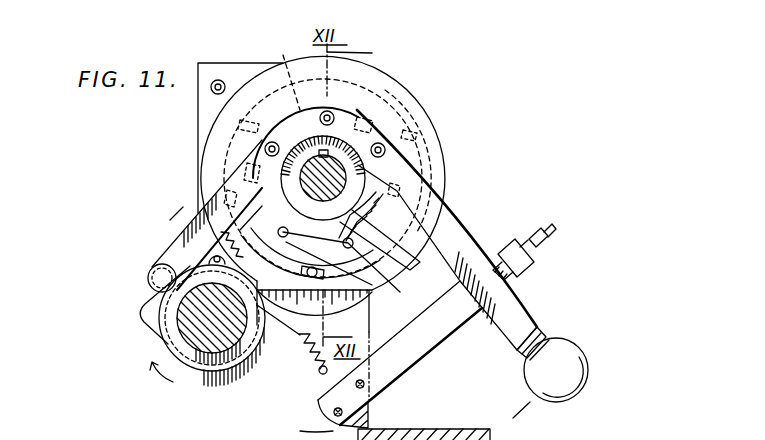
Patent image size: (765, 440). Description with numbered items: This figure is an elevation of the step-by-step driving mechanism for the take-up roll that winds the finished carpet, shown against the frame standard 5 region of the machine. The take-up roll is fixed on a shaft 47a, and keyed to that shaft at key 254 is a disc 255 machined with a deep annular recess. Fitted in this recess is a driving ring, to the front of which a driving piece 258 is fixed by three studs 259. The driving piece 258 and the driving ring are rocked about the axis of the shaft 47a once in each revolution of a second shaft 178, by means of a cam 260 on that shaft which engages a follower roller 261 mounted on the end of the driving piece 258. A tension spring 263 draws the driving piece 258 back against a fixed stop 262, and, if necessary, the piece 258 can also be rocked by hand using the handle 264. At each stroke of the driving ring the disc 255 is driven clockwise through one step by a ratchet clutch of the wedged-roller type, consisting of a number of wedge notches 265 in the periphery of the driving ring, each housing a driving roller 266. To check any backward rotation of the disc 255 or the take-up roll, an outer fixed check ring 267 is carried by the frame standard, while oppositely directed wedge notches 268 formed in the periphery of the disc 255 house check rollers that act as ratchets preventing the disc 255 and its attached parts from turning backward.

The dial plate 5 is at (372, 53).
The shaft 47a is at (330, 180).
The shaft 178 is at (190, 336).
The key 254 is at (327, 153).
The disc 255 is at (400, 268).
The driving piece 258 is at (195, 210).
The studs 259 is at (265, 148).
The cam 260 is at (153, 336).
The follower roller 261 is at (148, 274).
The fixed stop 262 is at (515, 276).
The tension spring 263 is at (302, 353).
The handle 264 is at (566, 389).
The wedge notches 265 is at (378, 287).
The driving roller 266 is at (288, 234).
The outer fixed check ring 267 is at (428, 431).
The wedge notches 268 is at (370, 306).